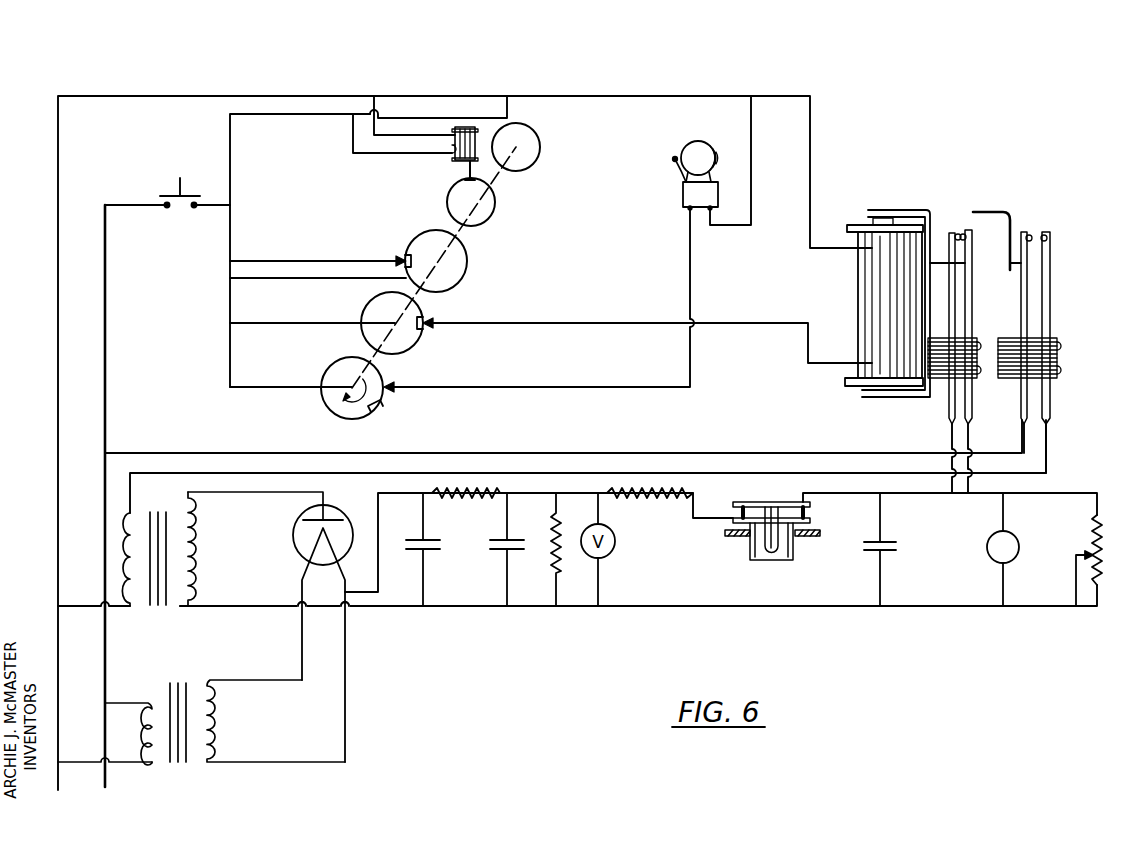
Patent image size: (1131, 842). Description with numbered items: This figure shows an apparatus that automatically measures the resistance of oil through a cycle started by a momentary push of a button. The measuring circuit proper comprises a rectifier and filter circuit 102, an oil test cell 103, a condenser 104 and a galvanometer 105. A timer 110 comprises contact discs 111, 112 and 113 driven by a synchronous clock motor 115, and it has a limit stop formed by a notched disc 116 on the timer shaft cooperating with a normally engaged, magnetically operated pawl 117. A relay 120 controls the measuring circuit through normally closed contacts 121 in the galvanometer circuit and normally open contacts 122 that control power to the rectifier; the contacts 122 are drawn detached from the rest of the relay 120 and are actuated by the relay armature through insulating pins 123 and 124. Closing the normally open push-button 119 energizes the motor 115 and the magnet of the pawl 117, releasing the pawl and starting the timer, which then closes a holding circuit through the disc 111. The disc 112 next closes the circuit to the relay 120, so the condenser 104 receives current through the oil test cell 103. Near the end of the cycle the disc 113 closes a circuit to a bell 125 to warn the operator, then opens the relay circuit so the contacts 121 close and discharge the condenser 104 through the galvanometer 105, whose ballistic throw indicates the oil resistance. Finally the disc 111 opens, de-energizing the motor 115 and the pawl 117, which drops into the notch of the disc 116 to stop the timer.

The rectifier and filter circuit 102 is at (385, 597).
The oil test cell 103 is at (767, 567).
The condenser 104 is at (885, 545).
The galvanometer 105 is at (988, 552).
The timer 110 is at (474, 257).
The contact disc 111 is at (467, 275).
The contact disc 112 is at (426, 312).
The contact disc 113 is at (380, 376).
The synchronous clock motor 115 is at (540, 136).
The notched disc 116 is at (496, 197).
The magnetically operated pawl 117 is at (450, 176).
The push-button 119 is at (178, 188).
The relay 120 is at (921, 204).
The normally closed contacts 121 is at (963, 229).
The normally open contacts 122 is at (1037, 232).
The insulating pin 123 is at (937, 256).
The insulating pin 124 is at (1015, 268).
The bell 125 is at (694, 141).